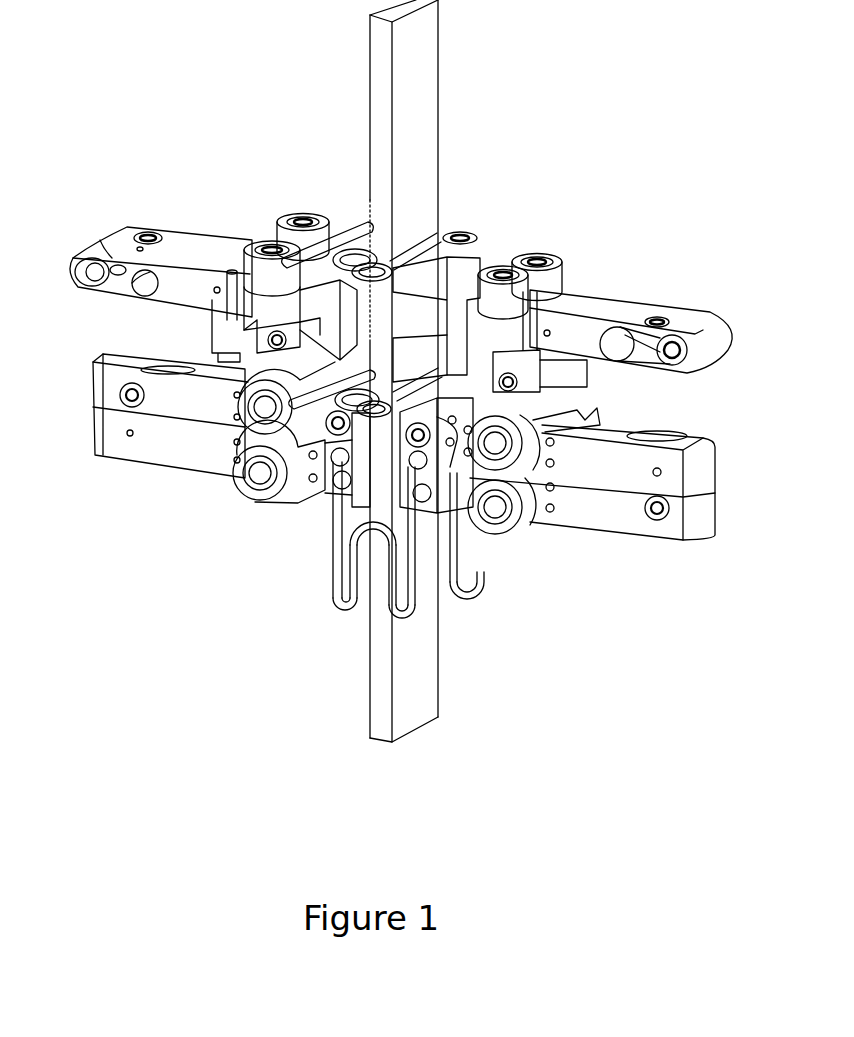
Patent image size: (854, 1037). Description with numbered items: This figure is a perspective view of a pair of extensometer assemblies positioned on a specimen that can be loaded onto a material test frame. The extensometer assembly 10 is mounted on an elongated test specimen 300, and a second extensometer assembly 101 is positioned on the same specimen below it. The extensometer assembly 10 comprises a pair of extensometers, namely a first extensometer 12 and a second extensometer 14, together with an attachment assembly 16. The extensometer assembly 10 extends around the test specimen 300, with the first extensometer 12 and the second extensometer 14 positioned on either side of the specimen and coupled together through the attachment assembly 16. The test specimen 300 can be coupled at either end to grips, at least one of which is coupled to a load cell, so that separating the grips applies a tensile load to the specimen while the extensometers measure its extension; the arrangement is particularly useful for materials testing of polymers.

The extensometer assembly 10 is at (578, 170).
The first extensometer 12 is at (644, 292).
The second extensometer 14 is at (133, 210).
The attachment assembly 16 is at (345, 224).
The second extensometer assembly 101 is at (718, 455).
The test specimen 300 is at (432, 108).